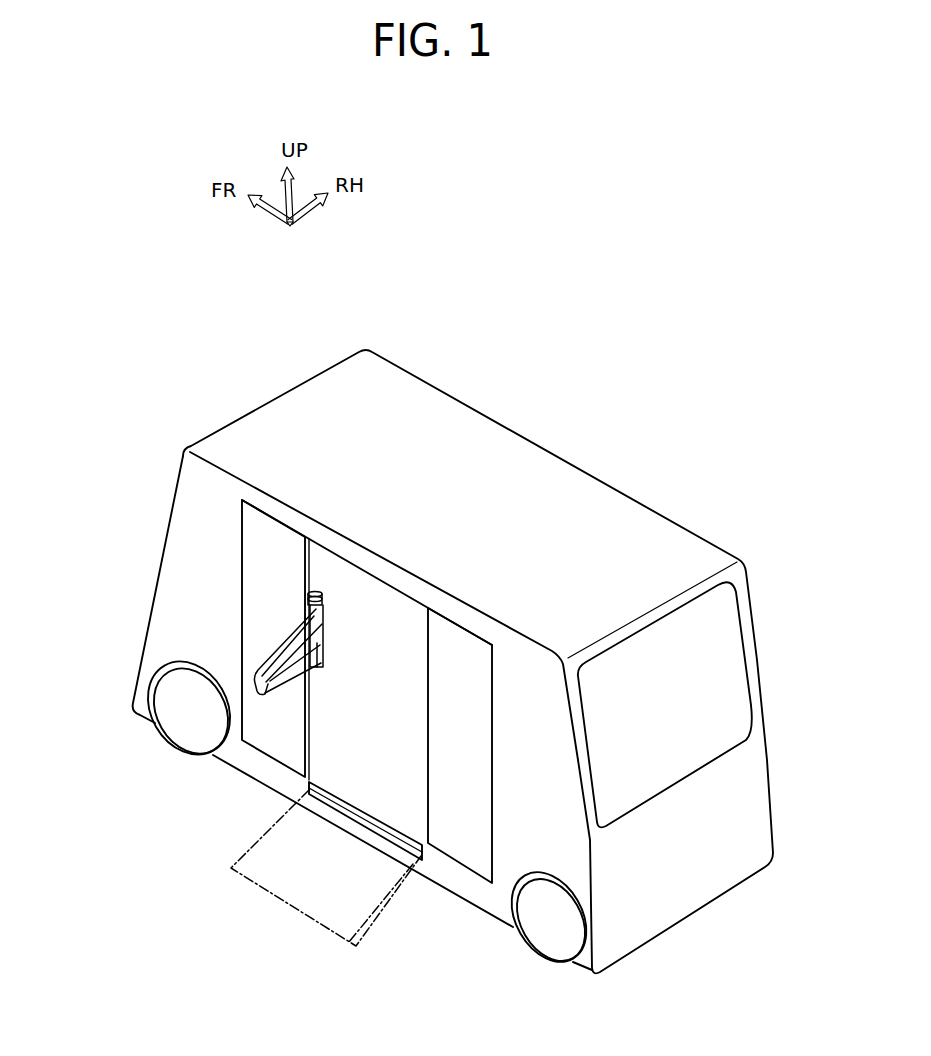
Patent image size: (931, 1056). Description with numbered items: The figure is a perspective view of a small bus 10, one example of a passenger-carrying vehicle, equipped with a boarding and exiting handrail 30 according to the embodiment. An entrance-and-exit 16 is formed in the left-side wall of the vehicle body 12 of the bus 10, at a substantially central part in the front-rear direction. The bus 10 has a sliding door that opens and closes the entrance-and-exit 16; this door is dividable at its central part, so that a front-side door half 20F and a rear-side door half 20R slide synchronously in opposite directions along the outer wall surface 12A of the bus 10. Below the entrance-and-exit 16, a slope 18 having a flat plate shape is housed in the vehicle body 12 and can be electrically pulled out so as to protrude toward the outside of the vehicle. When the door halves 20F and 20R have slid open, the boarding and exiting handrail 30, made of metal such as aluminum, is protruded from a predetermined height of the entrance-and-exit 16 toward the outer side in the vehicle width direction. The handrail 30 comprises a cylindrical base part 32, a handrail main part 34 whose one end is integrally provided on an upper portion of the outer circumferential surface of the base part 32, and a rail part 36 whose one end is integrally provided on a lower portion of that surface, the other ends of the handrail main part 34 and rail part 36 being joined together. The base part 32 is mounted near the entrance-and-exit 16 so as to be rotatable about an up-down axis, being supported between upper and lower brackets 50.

The bus 10 is at (434, 657).
The vehicle body 12 is at (434, 657).
The outer wall surface 12A is at (182, 495).
The entrance-and-exit 16 is at (378, 576).
The slope 18 is at (348, 808).
The front-side door half 20F is at (260, 537).
The rear-side door half 20R is at (460, 670).
The boarding and exiting handrail 30 is at (252, 654).
The base part 32 is at (324, 637).
The handrail main part 34 is at (285, 625).
The rail part 36 is at (273, 640).
The bracket 50 is at (321, 596).